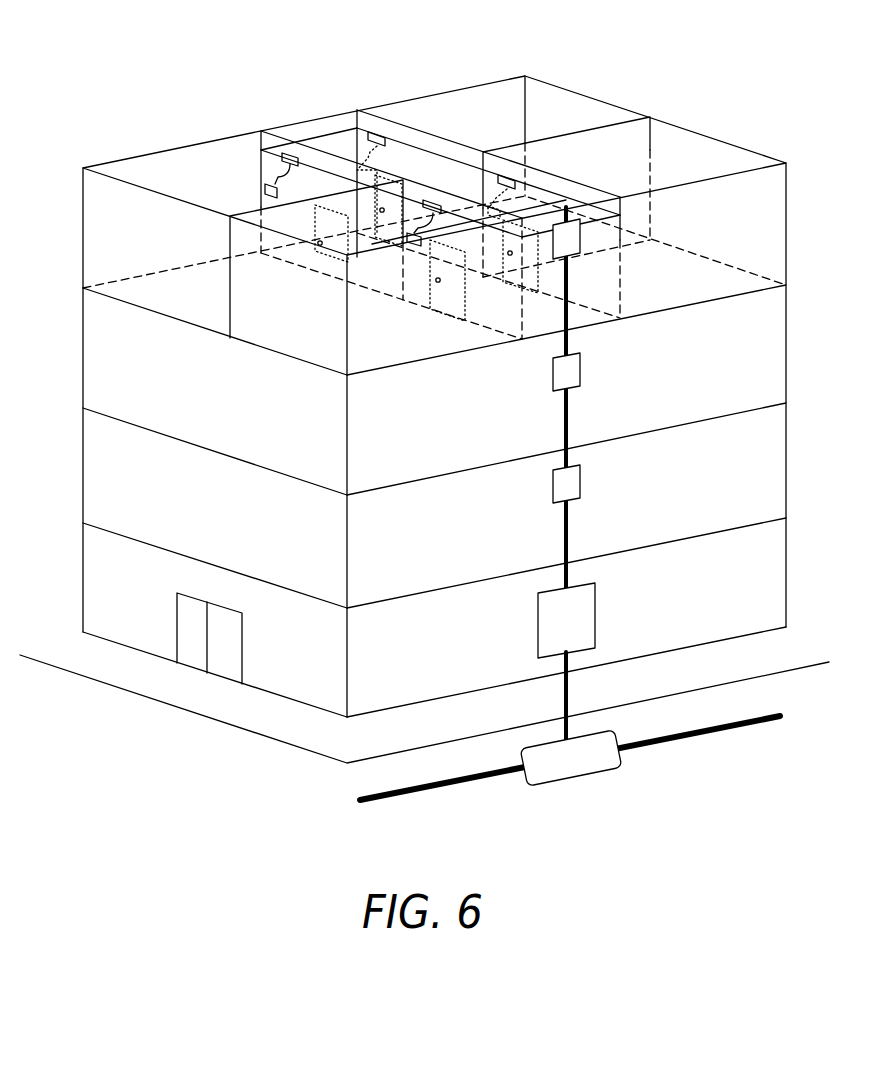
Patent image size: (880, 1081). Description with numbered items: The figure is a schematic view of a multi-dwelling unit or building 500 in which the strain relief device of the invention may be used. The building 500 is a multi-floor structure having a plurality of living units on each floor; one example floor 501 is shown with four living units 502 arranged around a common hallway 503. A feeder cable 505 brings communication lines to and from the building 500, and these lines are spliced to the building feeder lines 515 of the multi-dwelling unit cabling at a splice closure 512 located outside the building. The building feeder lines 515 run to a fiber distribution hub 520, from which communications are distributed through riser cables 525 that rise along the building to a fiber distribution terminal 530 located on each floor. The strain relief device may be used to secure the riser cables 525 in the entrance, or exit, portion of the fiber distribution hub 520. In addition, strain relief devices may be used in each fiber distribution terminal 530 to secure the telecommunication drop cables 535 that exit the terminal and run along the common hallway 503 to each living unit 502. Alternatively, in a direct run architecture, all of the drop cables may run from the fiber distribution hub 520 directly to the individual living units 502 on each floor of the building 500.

The multi-dwelling unit 500 is at (228, 31).
The floor 501 is at (667, 122).
The living units 502 is at (563, 102).
The common hallway 503 is at (340, 122).
The feeder cable 505 is at (458, 787).
The splice closure 512 is at (571, 758).
The building feeder lines 515 is at (564, 700).
The fiber distribution hub 520 is at (584, 631).
The riser cables 525 is at (564, 338).
The fiber distribution terminal 530 is at (576, 240).
The telecommunication drop cables 535 is at (312, 138).